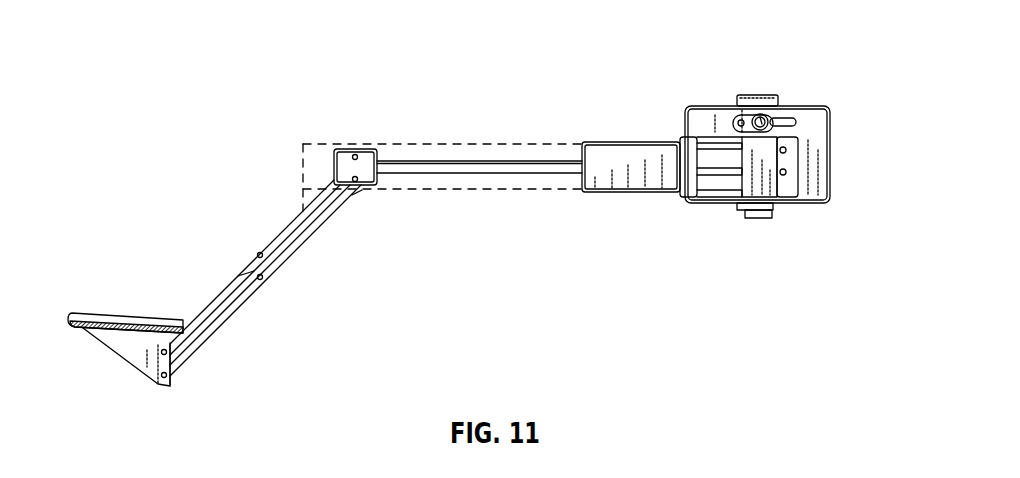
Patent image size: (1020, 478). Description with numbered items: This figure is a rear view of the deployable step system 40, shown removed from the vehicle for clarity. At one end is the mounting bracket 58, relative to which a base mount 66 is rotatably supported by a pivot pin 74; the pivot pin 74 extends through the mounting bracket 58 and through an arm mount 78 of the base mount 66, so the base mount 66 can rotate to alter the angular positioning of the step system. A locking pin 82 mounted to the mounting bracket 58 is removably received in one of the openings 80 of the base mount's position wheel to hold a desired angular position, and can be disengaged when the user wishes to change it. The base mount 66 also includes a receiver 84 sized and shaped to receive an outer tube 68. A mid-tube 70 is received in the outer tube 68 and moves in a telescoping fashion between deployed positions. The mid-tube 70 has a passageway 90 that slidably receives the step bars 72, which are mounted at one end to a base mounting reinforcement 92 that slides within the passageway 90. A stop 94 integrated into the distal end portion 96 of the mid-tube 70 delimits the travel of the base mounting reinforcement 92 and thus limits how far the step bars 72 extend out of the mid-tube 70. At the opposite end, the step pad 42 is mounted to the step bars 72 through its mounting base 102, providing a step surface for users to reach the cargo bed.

The deployable step system 40 is at (637, 82).
The step pad 42 is at (138, 311).
The mounting bracket 58 is at (822, 130).
The base mount 66 is at (727, 206).
The outer tube 68 is at (613, 198).
The mid-tube 70 is at (477, 140).
The step bars 72 is at (244, 293).
The pivot pin 74 is at (757, 95).
The arm mount 78 is at (766, 186).
The openings 80 is at (531, 160).
The locking pin 82 is at (774, 121).
The receiver 84 is at (691, 190).
The passageway 90 is at (461, 186).
The base mounting reinforcement 92 is at (362, 149).
The stop 94 is at (357, 196).
The distal end portion 96 is at (308, 138).
The mounting base 102 is at (130, 356).